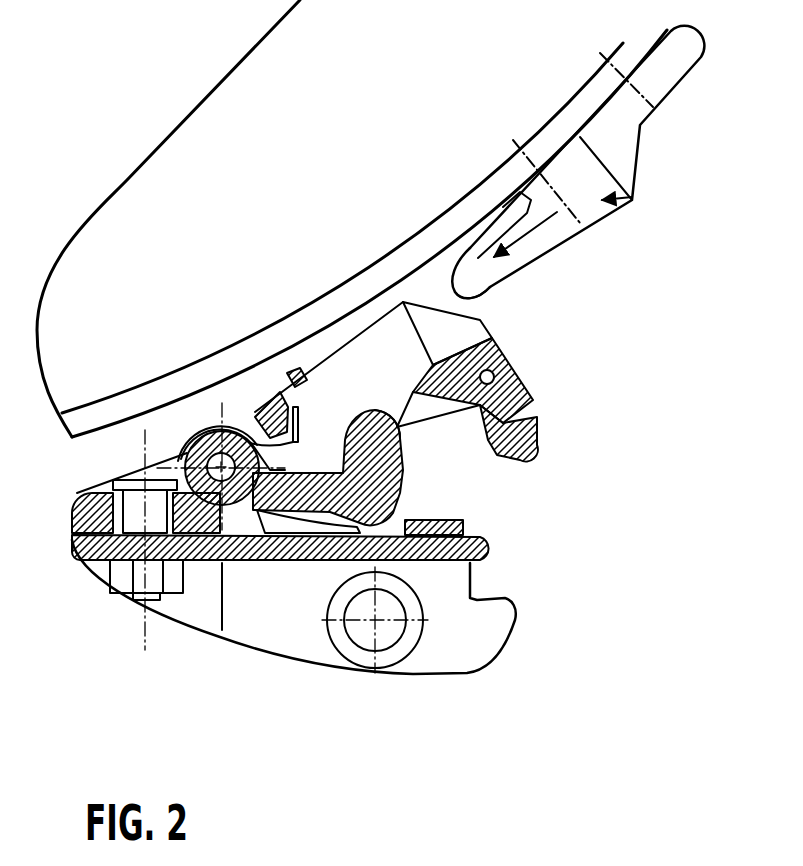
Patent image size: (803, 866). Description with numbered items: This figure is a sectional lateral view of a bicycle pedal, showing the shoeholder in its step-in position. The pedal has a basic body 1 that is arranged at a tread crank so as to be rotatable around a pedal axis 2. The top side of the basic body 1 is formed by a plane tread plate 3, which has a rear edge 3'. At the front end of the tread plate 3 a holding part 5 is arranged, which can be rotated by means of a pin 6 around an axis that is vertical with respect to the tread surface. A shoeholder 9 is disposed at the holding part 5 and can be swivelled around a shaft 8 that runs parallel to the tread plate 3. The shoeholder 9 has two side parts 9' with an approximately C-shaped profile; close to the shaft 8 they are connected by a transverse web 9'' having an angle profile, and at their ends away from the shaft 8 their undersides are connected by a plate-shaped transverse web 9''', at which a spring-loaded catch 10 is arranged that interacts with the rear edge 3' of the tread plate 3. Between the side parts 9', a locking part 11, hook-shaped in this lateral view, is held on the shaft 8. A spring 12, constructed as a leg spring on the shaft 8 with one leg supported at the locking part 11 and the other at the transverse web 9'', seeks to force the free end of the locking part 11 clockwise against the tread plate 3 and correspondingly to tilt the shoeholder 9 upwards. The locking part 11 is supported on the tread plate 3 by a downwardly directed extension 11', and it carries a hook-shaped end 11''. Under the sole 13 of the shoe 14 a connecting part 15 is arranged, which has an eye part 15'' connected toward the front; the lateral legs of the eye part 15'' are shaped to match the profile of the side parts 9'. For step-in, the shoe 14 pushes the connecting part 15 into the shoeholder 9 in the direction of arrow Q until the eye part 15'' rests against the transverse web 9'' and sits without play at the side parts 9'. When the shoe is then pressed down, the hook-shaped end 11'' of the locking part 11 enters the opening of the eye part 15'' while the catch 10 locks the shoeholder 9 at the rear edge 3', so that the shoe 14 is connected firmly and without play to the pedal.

The basic body 1 is at (275, 630).
The pedal axis 2 is at (365, 633).
The tread plate 3 is at (228, 619).
The rear edge of the tread surface 3' is at (313, 555).
The holding part 5 is at (72, 513).
The pin 6 is at (127, 590).
The shaft 8 is at (203, 450).
The shoeholder 9 is at (407, 364).
The side parts 9' is at (382, 280).
The transverse web 9'' is at (303, 407).
The plate-shaped transverse web 9''' is at (403, 362).
The catch 10 is at (518, 396).
The locking part 11 is at (377, 467).
The extension 11' is at (360, 557).
The hook-shaped end 11'' is at (423, 429).
The spring 12 is at (228, 427).
The sole 13 is at (330, 303).
The shoe 14 is at (196, 136).
The connecting part 15 is at (578, 162).
The eye part 15'' is at (510, 289).
The arrow Q is at (533, 228).